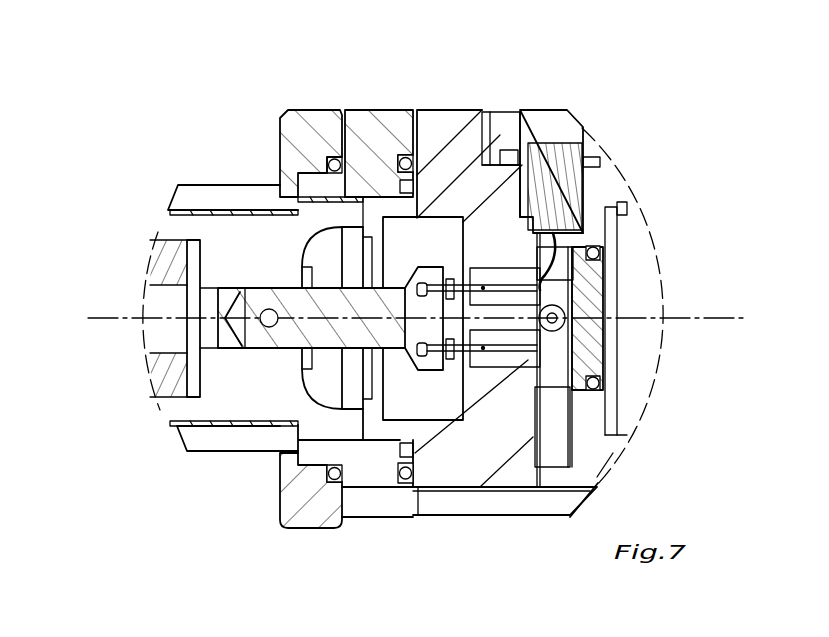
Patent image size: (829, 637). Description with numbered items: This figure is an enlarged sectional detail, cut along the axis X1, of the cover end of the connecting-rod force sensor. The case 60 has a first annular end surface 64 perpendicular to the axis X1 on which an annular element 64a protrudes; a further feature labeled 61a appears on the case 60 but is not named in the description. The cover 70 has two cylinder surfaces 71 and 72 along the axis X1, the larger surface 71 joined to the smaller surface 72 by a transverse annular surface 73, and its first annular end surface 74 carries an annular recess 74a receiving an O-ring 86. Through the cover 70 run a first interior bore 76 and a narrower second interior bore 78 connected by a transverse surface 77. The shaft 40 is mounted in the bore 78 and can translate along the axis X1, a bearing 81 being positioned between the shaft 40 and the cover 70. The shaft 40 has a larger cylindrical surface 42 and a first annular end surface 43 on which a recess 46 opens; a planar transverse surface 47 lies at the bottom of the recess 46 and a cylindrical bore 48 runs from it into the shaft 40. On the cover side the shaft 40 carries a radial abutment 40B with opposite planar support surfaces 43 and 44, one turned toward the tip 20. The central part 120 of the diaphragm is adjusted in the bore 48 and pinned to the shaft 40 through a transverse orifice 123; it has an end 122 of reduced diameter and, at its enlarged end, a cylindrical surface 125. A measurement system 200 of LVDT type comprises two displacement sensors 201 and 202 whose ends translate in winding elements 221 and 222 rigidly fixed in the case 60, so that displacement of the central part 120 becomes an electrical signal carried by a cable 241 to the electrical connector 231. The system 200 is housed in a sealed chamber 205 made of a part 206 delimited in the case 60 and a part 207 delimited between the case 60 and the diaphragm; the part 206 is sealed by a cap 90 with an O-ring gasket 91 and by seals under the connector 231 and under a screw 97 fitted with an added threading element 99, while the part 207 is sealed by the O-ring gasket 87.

The axis X1 is at (402, 318).
The tip 20 is at (227, 298).
The shaft 40 is at (197, 407).
The abutment 40B is at (330, 425).
The cylindrical surface 42 is at (312, 450).
The first annular end surface 43 is at (370, 428).
The support surface 44 is at (290, 437).
The recess 46 is at (273, 360).
The transverse surface 47 is at (280, 456).
The cylindrical bore 48 is at (303, 398).
The case 60 is at (598, 448).
The housing insert 61a is at (503, 124).
The first annular end surface 64 is at (410, 432).
The annular element 64a is at (412, 457).
The cover 70 is at (283, 107).
The cylinder surface 71 is at (303, 133).
The cylinder surface 72 is at (220, 183).
The transverse annular surface 73 is at (272, 126).
The first annular end surface 74 is at (345, 138).
The annular recess 74a is at (298, 101).
The first interior bore 76 is at (347, 212).
The transverse surface 77 is at (279, 133).
The second interior bore 78 is at (163, 240).
The bearing 81 is at (188, 212).
The O-ring 86 is at (327, 155).
The O-ring gasket 87 is at (398, 150).
The cap 90 is at (603, 252).
The O-ring gasket 91 is at (583, 280).
The screw 97 is at (562, 323).
The added threading element 99 is at (600, 385).
The central part 120 is at (270, 333).
The end 122 is at (300, 268).
The orifice 123 is at (303, 242).
The cylindrical surface 125 is at (425, 300).
The measurement system 200 is at (590, 210).
The displacement sensor 201 is at (490, 347).
The displacement sensor 202 is at (483, 288).
The sealed chamber 205 is at (484, 594).
The part of sealed chamber 206 is at (547, 377).
The part of sealed chamber 207 is at (445, 392).
The element comprising a winding 221 is at (540, 297).
The element comprising a winding 222 is at (598, 410).
The electrical connector 231 is at (531, 110).
The cable 241 is at (628, 217).